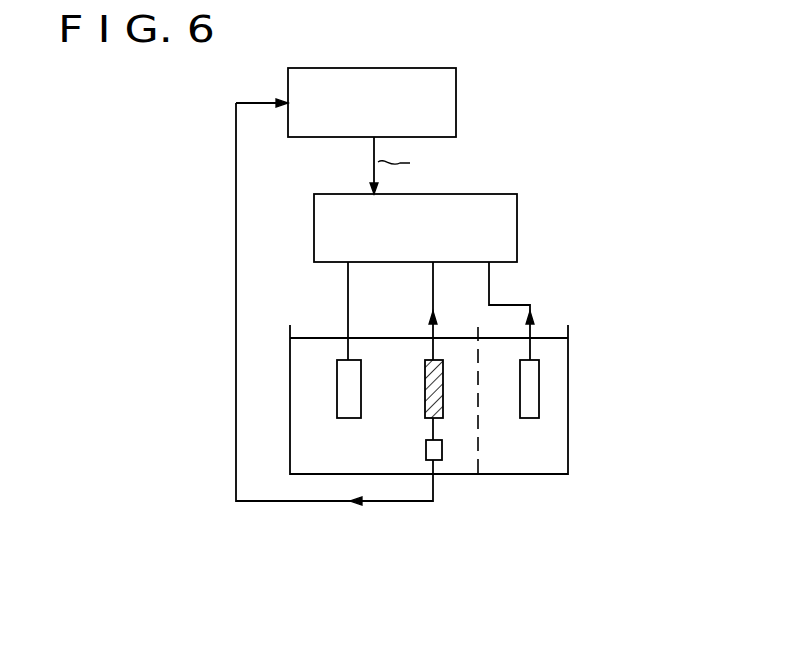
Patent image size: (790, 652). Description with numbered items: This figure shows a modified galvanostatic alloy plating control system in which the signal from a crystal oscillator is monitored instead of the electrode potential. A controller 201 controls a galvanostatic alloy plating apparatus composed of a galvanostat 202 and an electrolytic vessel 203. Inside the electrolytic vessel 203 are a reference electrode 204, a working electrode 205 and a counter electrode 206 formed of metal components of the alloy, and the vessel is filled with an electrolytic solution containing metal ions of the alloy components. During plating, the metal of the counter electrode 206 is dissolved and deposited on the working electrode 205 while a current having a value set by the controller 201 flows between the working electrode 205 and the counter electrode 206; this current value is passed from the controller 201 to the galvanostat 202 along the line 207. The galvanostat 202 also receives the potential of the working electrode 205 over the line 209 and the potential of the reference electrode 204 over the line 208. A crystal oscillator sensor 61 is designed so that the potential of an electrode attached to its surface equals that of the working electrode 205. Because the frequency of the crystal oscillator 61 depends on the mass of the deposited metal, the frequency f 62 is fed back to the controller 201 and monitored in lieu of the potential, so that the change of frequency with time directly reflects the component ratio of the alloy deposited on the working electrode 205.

The controller 201 is at (456, 78).
The galvanostat 202 is at (517, 200).
The electrolytic vessel 203 is at (568, 363).
The reference electrode 204 is at (539, 394).
The working electrode 205 is at (428, 360).
The counter electrode 206 is at (340, 360).
The current value signal line 207 is at (374, 160).
The reference electrode potential line 208 is at (531, 310).
The working electrode potential line 209 is at (432, 287).
The crystal oscillator sensor 61 is at (442, 449).
The frequency f 62 is at (430, 503).